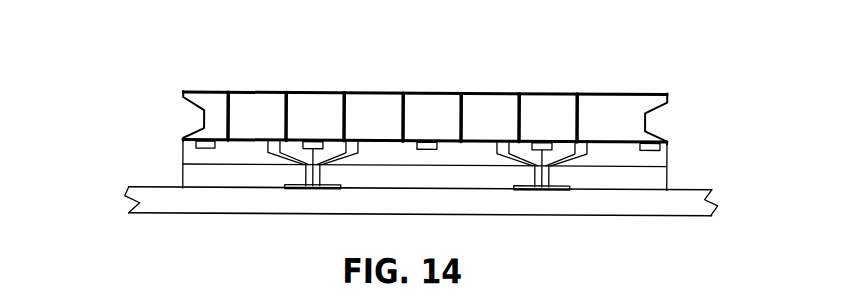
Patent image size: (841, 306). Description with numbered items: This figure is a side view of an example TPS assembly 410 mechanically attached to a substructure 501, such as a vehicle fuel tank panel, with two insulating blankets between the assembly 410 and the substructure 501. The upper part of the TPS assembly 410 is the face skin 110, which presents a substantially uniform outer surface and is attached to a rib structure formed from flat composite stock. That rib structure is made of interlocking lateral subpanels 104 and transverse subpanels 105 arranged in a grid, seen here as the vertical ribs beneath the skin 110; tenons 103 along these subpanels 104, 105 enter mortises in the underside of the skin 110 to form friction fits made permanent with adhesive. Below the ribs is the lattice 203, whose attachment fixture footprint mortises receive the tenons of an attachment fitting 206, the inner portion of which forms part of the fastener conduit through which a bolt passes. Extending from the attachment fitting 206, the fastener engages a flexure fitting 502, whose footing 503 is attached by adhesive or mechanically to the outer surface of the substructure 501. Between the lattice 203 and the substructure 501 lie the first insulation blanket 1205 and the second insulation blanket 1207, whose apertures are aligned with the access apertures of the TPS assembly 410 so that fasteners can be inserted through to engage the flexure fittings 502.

The TPS assembly 410 is at (182, 79).
The skin 110 is at (182, 91).
The lateral subpanel 104 is at (217, 105).
The transverse subpanel 105 is at (229, 120).
The lattice 203 is at (182, 139).
The tenon 103 is at (200, 146).
The second insulation blanket 1207 is at (655, 152).
The first insulation blanket 1205 is at (657, 175).
The substructure 501 is at (128, 191).
The attachment fitting 206 is at (292, 165).
The flexure fitting 502 is at (322, 169).
The footing 503 is at (303, 181).